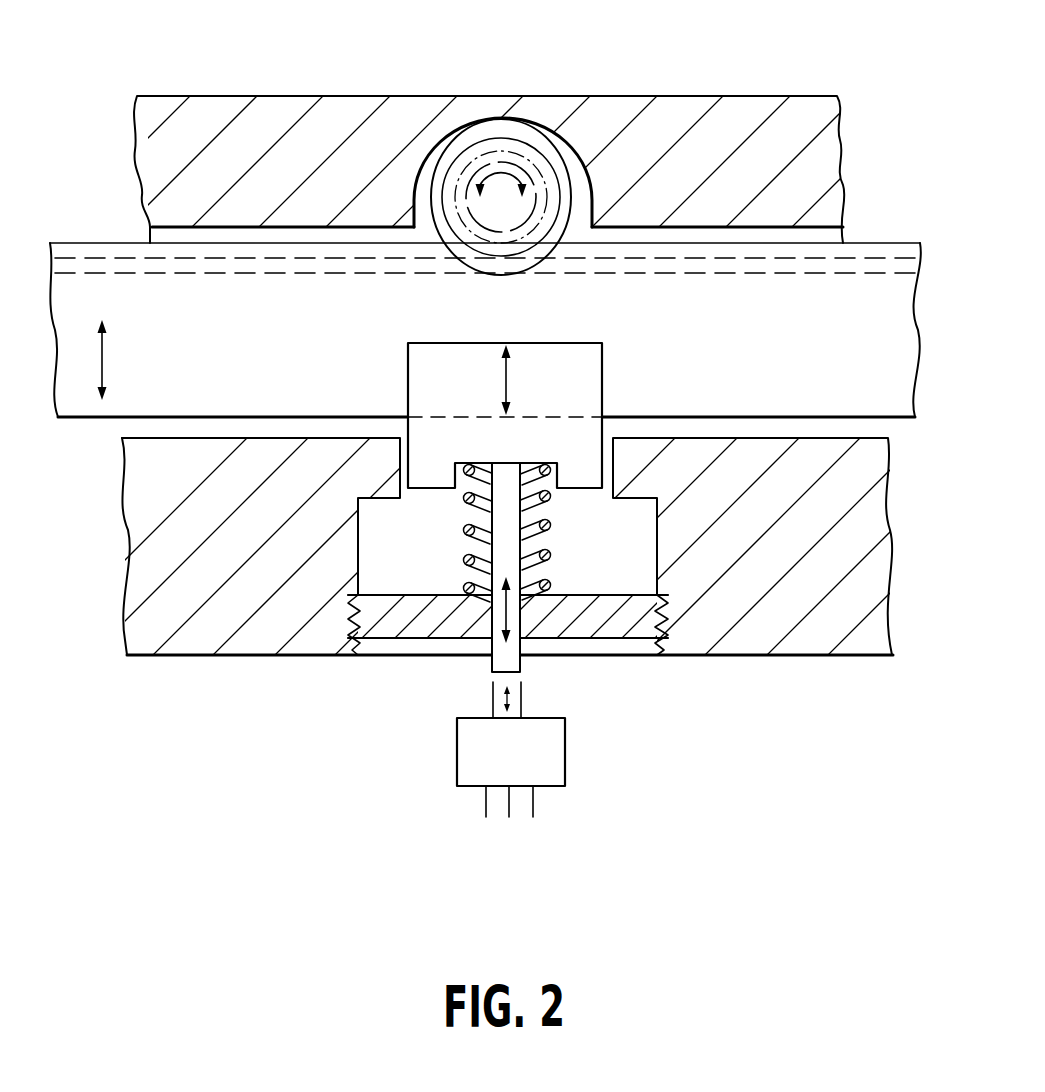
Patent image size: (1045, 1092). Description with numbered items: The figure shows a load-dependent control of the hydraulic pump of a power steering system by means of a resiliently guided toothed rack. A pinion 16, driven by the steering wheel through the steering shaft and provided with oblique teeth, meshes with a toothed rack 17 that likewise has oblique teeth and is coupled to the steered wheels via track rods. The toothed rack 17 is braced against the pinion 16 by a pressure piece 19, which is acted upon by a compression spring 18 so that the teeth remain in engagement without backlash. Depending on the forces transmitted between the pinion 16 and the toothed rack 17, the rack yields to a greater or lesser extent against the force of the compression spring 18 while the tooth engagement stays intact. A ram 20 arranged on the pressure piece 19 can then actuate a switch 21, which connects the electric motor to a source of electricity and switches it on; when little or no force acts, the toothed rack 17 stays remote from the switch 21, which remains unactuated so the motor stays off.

The pinion 16 is at (476, 165).
The toothed rack 17 is at (82, 290).
The compression spring 18 is at (486, 509).
The pressure piece 19 is at (437, 370).
The ram 20 is at (508, 658).
The switch 21 is at (466, 750).